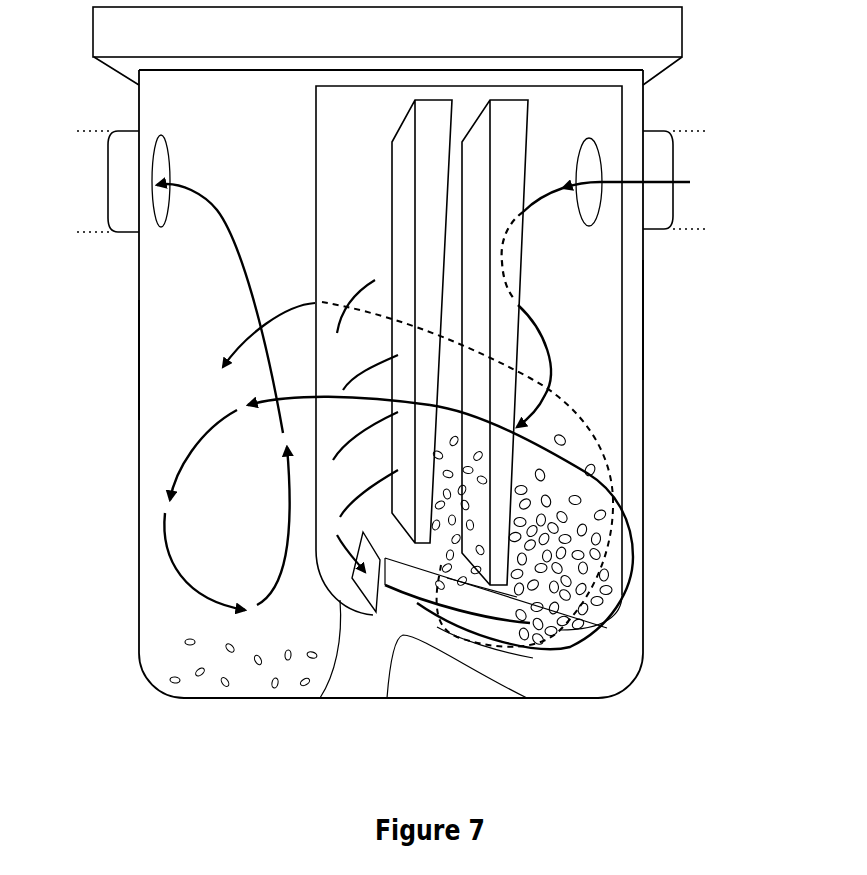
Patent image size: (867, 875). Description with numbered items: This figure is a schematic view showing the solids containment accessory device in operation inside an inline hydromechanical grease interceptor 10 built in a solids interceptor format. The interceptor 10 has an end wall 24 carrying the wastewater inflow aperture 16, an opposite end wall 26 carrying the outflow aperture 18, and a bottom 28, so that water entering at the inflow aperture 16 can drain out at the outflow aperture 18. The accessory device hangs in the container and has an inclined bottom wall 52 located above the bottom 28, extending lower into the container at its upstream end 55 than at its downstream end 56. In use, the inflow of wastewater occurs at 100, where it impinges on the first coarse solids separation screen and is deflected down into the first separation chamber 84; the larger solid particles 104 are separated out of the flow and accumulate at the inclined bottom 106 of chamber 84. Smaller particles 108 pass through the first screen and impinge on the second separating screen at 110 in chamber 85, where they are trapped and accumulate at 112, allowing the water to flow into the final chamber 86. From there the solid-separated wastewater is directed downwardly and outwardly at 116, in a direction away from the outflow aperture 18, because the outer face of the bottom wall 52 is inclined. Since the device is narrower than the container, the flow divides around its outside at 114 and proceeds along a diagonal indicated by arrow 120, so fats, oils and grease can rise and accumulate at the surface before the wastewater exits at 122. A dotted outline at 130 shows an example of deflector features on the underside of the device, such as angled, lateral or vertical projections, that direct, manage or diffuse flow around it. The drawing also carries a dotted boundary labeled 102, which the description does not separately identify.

The inline interceptor 10 is at (138, 620).
The inflow aperture 16 is at (678, 196).
The outflow aperture 18 is at (107, 172).
The end wall 24 is at (645, 292).
The end wall 26 is at (138, 335).
The bottom 28 is at (467, 700).
The inclined bottom wall 52 is at (387, 700).
The upstream end 55 is at (594, 655).
The downstream end 56 is at (235, 663).
The first separation chamber 84 is at (514, 342).
The chamber 85 is at (432, 321).
The final chamber 86 is at (422, 350).
The inflow of wastewater 100 is at (655, 178).
The filter media boundary 102 is at (573, 403).
The larger solid particles 104 is at (600, 523).
The inclined bottom 106 is at (555, 622).
The smaller particles 108 is at (447, 560).
The impingement location on second separating screen 110 is at (407, 567).
The accumulation location 112 is at (517, 597).
The flow division location 114 is at (593, 467).
The downward outward flow direction 116 is at (352, 580).
The arrow 120 is at (287, 400).
The exit location 122 is at (192, 192).
The deflector features 130 is at (537, 637).